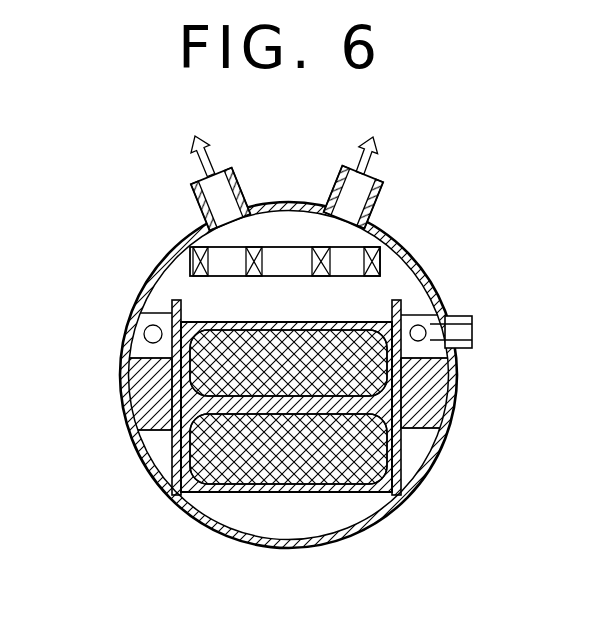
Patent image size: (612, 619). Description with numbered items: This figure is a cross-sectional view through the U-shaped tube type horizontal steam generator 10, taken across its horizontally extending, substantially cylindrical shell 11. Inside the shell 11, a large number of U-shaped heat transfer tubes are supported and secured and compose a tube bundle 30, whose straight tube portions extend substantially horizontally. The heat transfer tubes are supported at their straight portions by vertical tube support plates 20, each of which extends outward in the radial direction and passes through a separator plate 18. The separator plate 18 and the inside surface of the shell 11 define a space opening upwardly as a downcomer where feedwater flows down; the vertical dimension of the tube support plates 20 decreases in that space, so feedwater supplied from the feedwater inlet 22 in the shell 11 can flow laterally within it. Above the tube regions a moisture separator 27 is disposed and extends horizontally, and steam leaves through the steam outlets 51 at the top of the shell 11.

The horizontal steam generator 10 is at (287, 353).
The shell 11 is at (228, 532).
The separator plate 18 is at (172, 312).
The tube support plate 20 is at (353, 444).
The feedwater inlet 22 is at (413, 327).
The moisture separator 27 is at (190, 260).
The tube bundle 30 is at (327, 467).
The steam outlets 51 is at (198, 212).